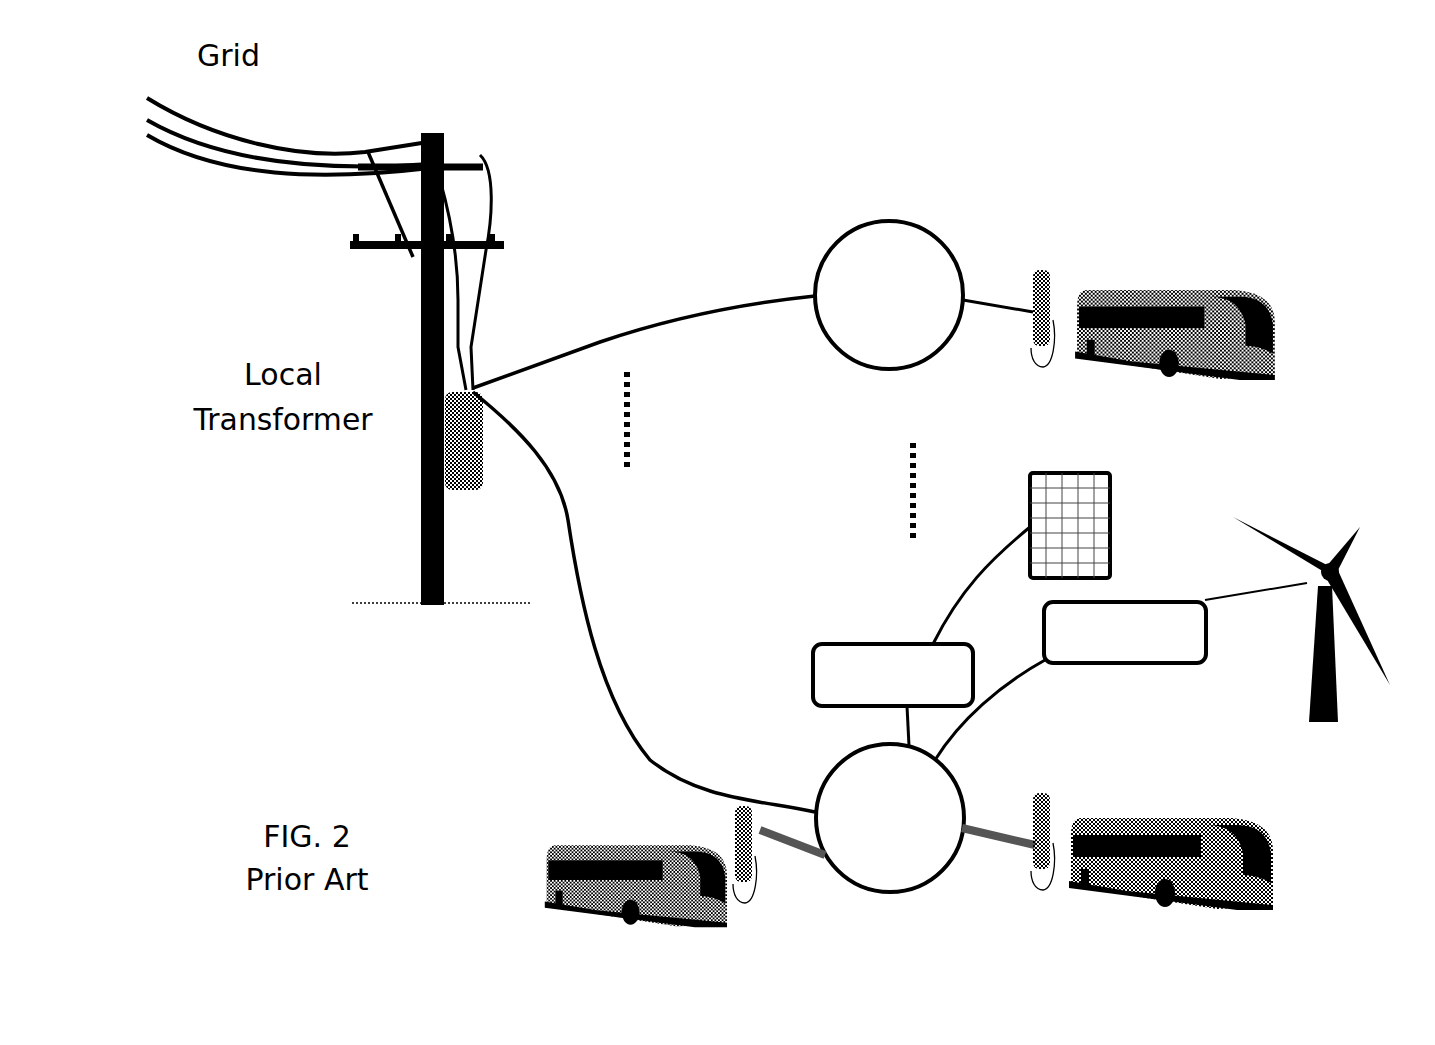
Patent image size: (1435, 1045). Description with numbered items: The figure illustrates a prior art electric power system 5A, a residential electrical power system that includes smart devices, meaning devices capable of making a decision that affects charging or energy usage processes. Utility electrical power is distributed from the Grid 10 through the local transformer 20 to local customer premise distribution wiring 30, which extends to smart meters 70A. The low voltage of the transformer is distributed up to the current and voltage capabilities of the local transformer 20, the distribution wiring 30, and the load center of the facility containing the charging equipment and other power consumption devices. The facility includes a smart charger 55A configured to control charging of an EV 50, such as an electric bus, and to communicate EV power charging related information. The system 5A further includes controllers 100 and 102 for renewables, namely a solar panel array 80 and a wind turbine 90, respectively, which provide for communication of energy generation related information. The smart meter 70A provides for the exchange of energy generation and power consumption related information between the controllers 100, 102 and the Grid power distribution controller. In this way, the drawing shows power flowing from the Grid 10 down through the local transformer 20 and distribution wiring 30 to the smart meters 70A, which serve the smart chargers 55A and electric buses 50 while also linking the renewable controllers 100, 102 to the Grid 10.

The prior art electric power system 5A is at (625, 117).
The Grid 10 is at (228, 121).
The local transformer 20 is at (447, 458).
The local customer premise distribution wiring 30 is at (603, 338).
The EV 50 is at (483, 808).
The smart charger 55A is at (1047, 262).
The smart meter 70A is at (883, 222).
The solar panel array 80 is at (1118, 498).
The wind turbine 90 is at (1332, 553).
The controller 100 is at (893, 641).
The controller 102 is at (1144, 664).